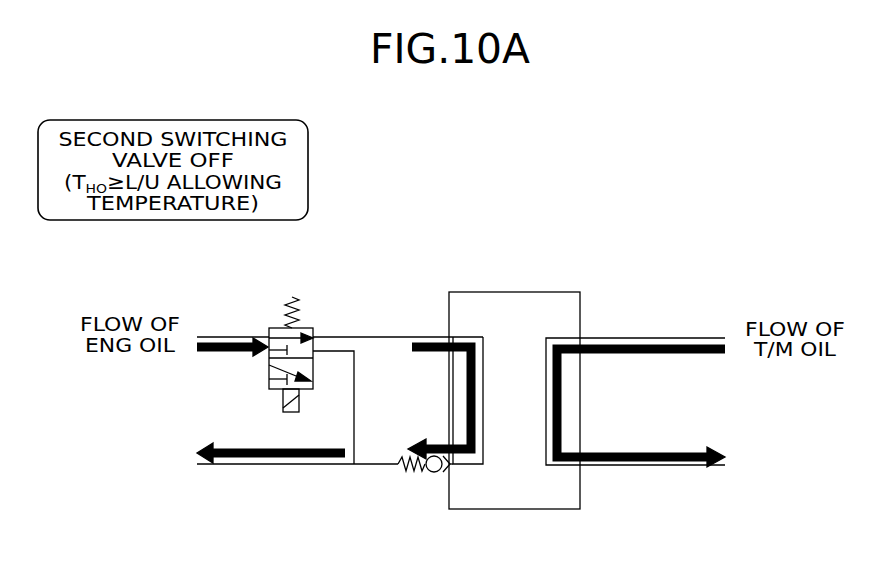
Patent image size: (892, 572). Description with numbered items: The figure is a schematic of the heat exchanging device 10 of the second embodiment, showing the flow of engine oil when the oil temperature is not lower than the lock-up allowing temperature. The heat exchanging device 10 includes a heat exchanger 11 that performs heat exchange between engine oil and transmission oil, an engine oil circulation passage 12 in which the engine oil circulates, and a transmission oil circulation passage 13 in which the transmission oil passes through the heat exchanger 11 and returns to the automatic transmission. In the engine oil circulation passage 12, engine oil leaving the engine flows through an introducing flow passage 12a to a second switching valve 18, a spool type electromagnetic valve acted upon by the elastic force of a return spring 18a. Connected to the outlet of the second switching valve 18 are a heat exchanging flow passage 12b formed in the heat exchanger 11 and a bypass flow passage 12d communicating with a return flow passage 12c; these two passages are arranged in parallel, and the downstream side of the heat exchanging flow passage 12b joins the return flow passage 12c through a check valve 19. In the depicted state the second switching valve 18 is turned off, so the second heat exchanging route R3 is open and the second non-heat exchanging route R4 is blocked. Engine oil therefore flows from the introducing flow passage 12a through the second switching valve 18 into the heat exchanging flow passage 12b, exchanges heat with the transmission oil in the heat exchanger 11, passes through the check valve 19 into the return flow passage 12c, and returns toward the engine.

The heat exchanging device 10 is at (606, 216).
The heat exchanger 11 is at (520, 292).
The engine oil circulation passage 12 is at (360, 514).
The introducing flow passage 12a is at (218, 337).
The heat exchanging flow passage 12b is at (484, 350).
The return flow passage 12c is at (258, 465).
The bypass flow passage 12d is at (356, 368).
The transmission oil circulation passage 13 is at (674, 497).
The second switching valve 18 is at (252, 384).
The return spring 18a is at (293, 296).
The check valve 19 is at (418, 494).
The second heat exchanging route R3 is at (436, 326).
The second non-heat exchanging route R4 is at (342, 418).